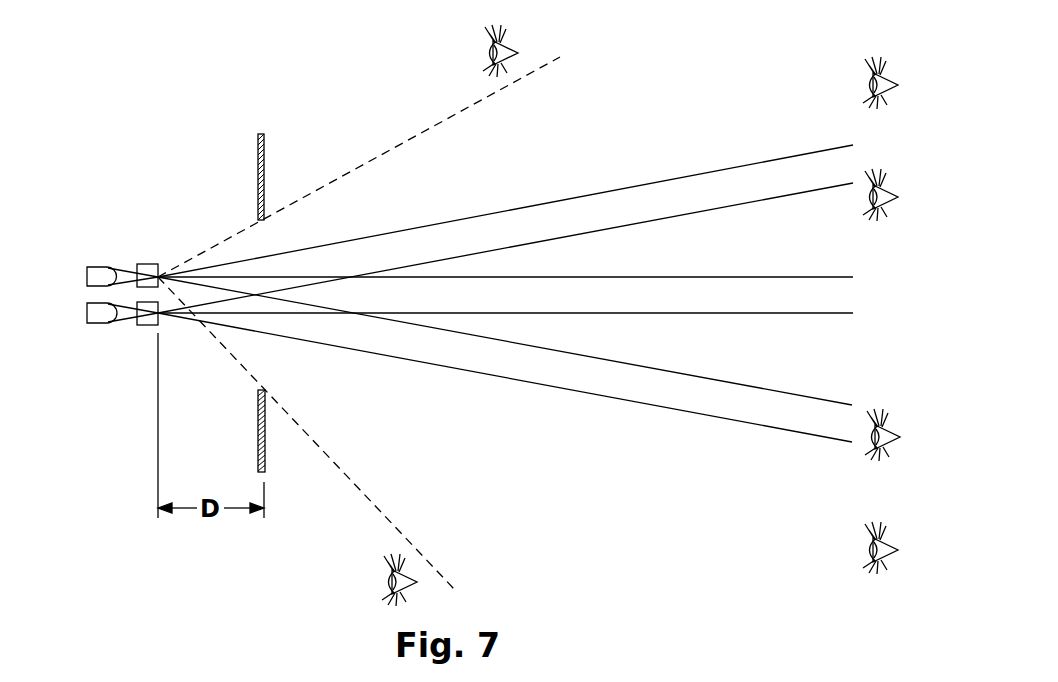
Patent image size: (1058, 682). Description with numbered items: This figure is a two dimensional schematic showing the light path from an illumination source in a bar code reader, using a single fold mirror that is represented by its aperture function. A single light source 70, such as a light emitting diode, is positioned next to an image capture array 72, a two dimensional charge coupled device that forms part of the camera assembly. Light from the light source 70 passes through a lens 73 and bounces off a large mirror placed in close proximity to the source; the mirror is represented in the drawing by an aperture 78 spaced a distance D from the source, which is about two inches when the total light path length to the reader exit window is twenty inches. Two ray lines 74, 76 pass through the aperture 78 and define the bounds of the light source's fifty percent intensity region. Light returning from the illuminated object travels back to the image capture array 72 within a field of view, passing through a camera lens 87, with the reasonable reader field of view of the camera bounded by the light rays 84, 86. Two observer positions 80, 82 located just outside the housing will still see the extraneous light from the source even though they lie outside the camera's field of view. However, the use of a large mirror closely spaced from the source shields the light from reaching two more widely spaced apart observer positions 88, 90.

The light source 70 is at (100, 266).
The image capture array 72 is at (98, 318).
The lens 73 is at (147, 264).
The camera lens 87 is at (145, 325).
The aperture 78 is at (261, 221).
The ray line 74 is at (503, 212).
The light ray 84 is at (438, 261).
The ray line 76 is at (600, 366).
The light ray 86 is at (517, 382).
The observer position 88 is at (508, 45).
The observer position 80 is at (893, 78).
The observer position 82 is at (892, 553).
The observer position 90 is at (387, 582).